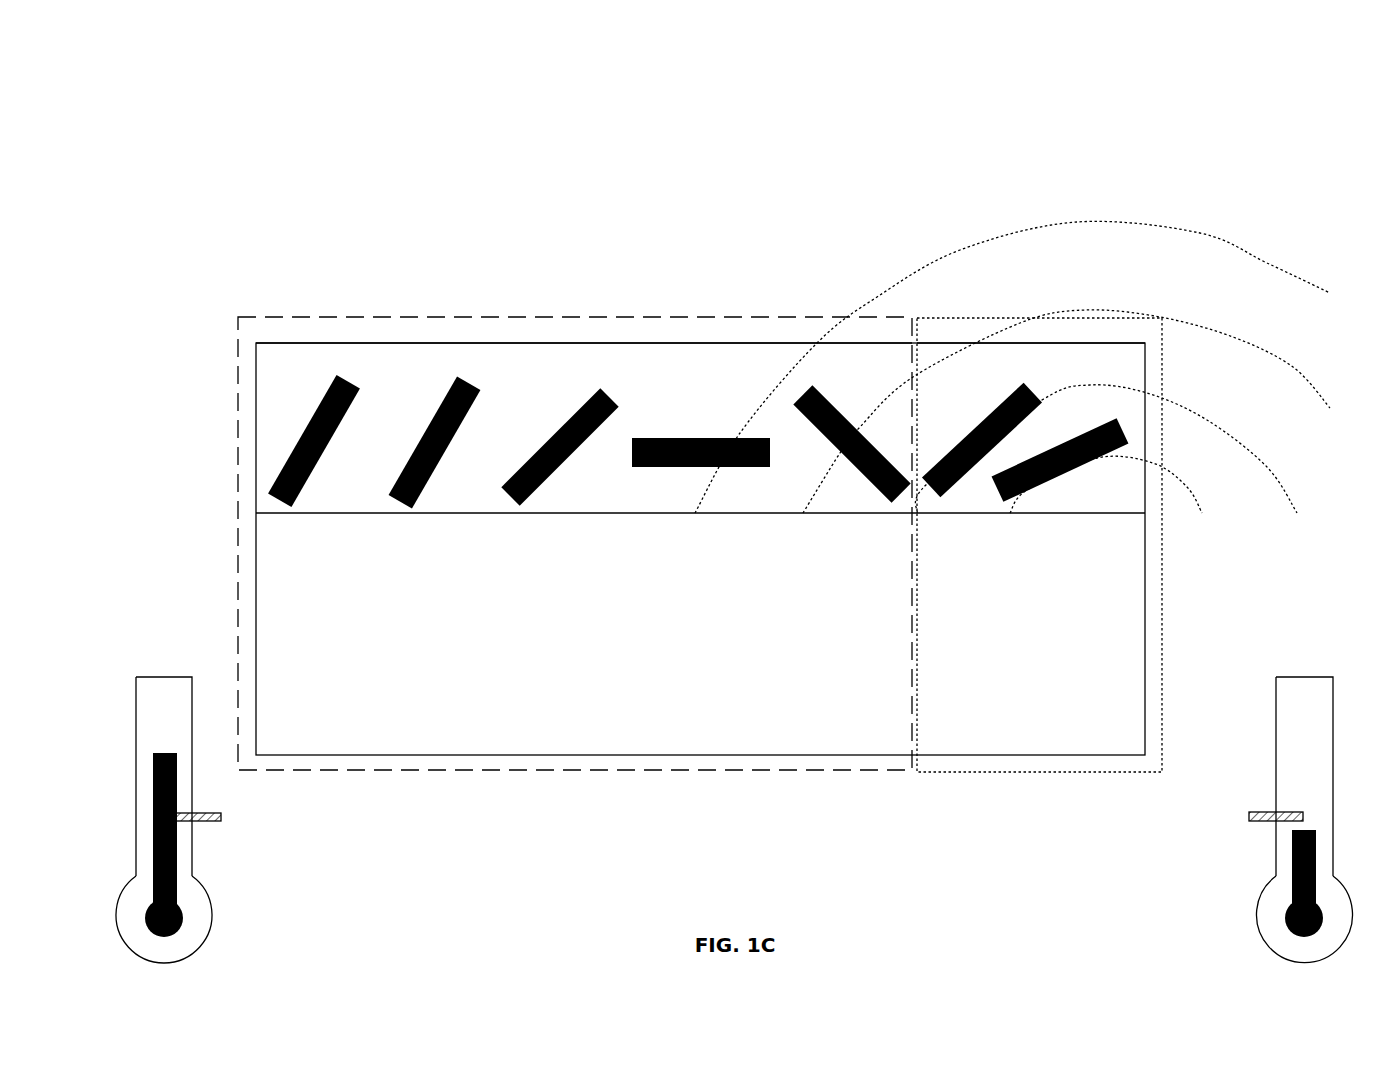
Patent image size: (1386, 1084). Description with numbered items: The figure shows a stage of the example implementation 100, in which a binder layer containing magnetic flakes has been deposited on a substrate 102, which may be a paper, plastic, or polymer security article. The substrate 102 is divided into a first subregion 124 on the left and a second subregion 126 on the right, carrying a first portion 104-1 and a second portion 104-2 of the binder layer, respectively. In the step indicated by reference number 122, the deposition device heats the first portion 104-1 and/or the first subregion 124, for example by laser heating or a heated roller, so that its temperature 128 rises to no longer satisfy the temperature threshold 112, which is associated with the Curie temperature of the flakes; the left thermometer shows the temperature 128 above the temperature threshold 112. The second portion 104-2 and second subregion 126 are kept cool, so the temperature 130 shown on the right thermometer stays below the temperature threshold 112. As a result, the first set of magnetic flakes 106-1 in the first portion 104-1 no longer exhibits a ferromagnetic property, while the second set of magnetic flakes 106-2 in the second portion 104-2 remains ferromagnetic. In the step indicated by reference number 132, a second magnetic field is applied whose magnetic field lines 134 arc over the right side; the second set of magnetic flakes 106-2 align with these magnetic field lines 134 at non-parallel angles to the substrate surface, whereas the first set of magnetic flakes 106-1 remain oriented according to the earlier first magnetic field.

The implementation 100 is at (252, 66).
The heating step 122 is at (487, 107).
The second magnetic field application step 132 is at (487, 177).
The magnetic field lines 134 is at (1183, 399).
The substrate 102 is at (684, 656).
The first subregion 124 is at (622, 782).
The second subregion 126 is at (945, 780).
The first portion of the binder layer 104-1 is at (290, 377).
The second portion of the binder layer 104-2 is at (948, 378).
The first set of magnetic flakes 106-1 is at (856, 473).
The second set of magnetic flakes 106-2 is at (954, 488).
The temperature threshold 112 is at (226, 817).
The temperature 128 is at (188, 889).
The temperature 130 is at (1283, 888).